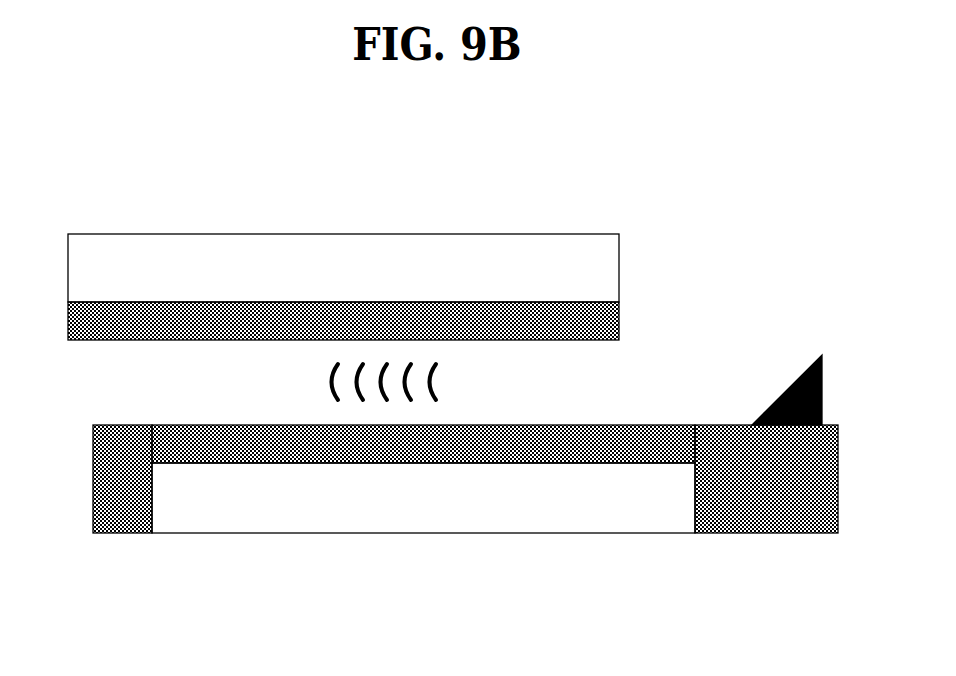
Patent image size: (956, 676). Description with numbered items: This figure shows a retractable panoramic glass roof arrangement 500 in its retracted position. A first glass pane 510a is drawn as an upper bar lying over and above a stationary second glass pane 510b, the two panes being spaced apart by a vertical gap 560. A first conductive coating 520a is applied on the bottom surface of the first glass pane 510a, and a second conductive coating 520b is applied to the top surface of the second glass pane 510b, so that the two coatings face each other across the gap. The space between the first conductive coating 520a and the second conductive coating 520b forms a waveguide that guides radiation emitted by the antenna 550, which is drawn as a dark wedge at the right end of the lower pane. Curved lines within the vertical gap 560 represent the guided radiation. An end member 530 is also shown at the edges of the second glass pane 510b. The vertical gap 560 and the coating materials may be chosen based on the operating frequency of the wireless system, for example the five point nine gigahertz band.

The display device 500 is at (413, 156).
The first glass pane 510a is at (155, 250).
The second glass pane 510b is at (273, 517).
The first conductive coating 520a is at (122, 325).
The second conductive coating 520b is at (172, 435).
The sealing member 530 is at (800, 523).
The antenna 550 is at (794, 382).
The vertical gap 560 is at (600, 380).